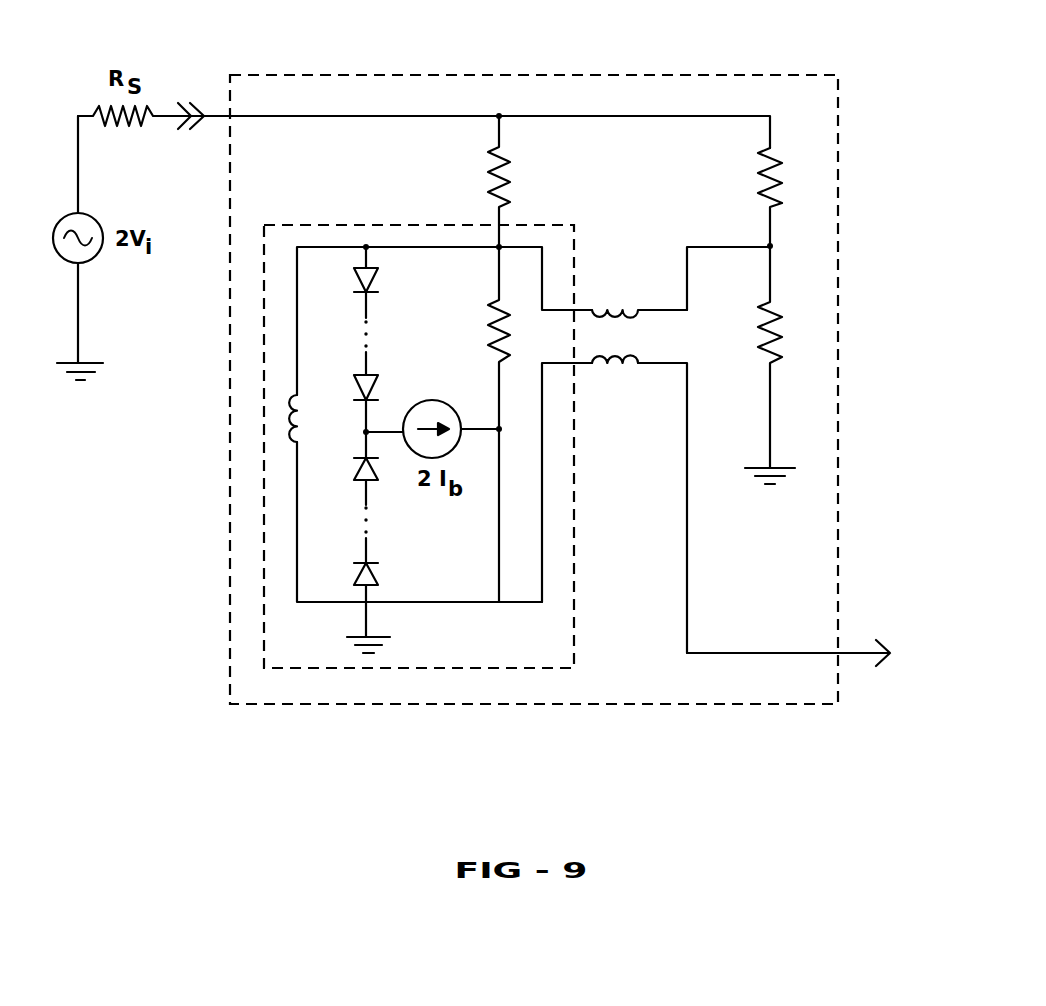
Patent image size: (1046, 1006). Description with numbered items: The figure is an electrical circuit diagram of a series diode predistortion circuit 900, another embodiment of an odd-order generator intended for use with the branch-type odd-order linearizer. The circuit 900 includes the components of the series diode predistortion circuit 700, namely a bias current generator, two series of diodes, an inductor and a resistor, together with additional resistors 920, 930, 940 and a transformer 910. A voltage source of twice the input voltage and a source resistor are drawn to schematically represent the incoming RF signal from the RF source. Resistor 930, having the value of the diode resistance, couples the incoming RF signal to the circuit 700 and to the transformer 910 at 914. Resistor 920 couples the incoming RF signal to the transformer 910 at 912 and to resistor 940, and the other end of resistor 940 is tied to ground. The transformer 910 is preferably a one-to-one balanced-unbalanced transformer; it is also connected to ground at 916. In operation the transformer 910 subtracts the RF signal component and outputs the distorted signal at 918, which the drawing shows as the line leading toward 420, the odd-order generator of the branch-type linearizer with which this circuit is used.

The series diode predistortion circuit 900 is at (443, 705).
The series diode predistortion circuit 700 is at (265, 637).
The resistor 930 is at (487, 175).
The resistor 920 is at (782, 165).
The resistor 940 is at (782, 333).
The transformer connection point 914 is at (543, 310).
The transformer connection point 912 is at (687, 308).
The transformer 910 is at (603, 364).
The transformer output 918 is at (687, 365).
The transformer ground connection 916 is at (542, 365).
The mixer 420 is at (810, 650).